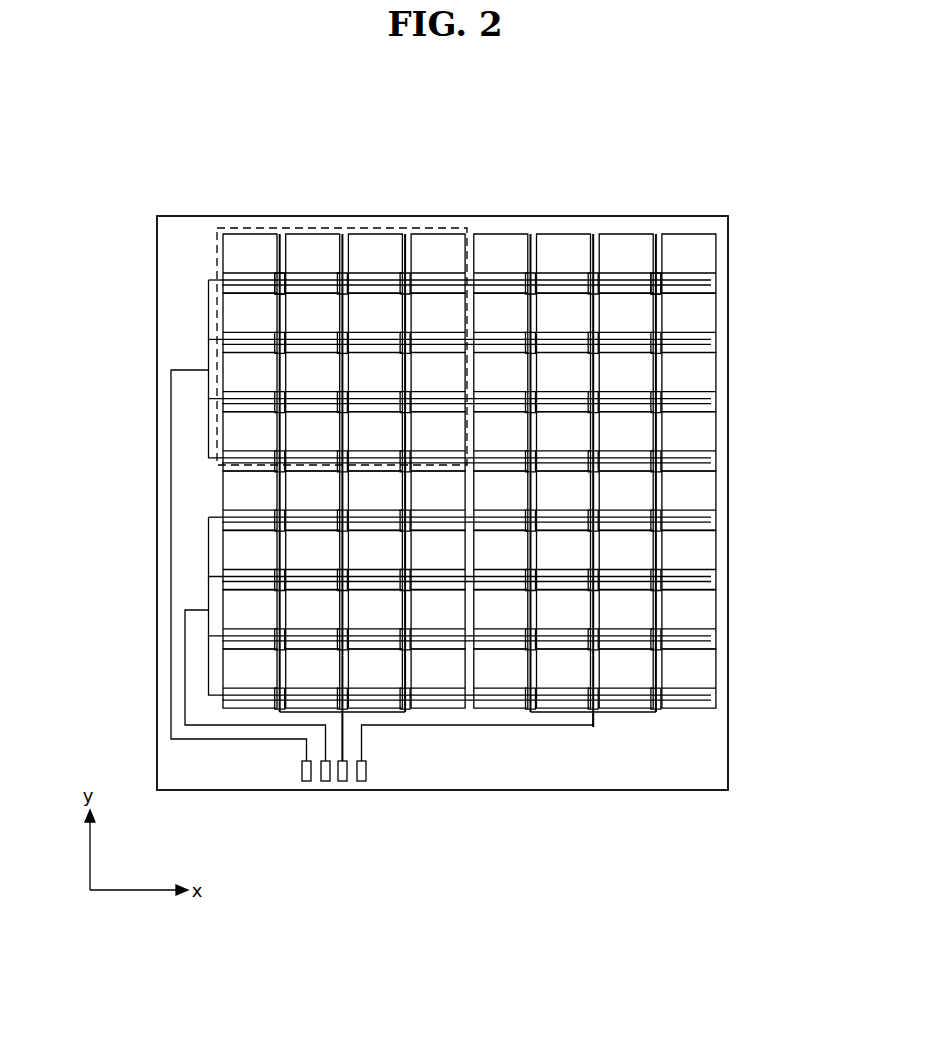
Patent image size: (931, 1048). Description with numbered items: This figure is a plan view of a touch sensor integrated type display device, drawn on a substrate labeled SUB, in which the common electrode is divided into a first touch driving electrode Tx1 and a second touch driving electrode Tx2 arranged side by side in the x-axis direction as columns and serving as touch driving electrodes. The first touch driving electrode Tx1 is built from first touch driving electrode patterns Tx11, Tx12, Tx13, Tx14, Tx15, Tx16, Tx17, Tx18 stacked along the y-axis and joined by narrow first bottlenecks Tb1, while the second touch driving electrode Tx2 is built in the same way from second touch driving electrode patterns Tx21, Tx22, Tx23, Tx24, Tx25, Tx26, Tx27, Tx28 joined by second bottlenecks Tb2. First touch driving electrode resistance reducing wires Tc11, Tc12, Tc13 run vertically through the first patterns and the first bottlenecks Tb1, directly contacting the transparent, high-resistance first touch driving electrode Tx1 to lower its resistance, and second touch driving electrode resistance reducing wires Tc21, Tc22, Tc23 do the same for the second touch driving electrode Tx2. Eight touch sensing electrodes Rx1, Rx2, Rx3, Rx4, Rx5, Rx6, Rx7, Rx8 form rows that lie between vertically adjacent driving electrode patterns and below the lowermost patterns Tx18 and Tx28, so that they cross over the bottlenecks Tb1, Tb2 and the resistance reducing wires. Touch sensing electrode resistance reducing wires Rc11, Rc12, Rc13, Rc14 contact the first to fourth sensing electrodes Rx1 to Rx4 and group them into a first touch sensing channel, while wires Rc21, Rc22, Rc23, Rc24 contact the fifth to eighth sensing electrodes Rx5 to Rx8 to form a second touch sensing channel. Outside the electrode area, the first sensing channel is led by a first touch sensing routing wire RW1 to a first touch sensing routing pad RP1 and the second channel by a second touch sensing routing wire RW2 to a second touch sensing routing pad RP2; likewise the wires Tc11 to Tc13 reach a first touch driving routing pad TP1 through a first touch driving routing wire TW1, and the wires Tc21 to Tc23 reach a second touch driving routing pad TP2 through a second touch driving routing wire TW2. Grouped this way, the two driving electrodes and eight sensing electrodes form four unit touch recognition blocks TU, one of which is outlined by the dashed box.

The substrate SUB is at (672, 778).
The unit touch recognition block TU is at (253, 228).
The first touch driving electrode Tx1 is at (455, 223).
The second touch driving electrode Tx2 is at (717, 223).
The first touch driving electrode pattern Tx11 is at (235, 249).
The first touch driving electrode pattern Tx12 is at (235, 308).
The first touch driving electrode pattern Tx13 is at (235, 368).
The first touch driving electrode pattern Tx14 is at (235, 427).
The first touch driving electrode pattern Tx15 is at (235, 486).
The first touch driving electrode pattern Tx16 is at (235, 546).
The first touch driving electrode pattern Tx17 is at (235, 605).
The first touch driving electrode pattern Tx18 is at (235, 664).
The second touch driving electrode pattern Tx21 is at (716, 250).
The second touch driving electrode pattern Tx22 is at (716, 309).
The second touch driving electrode pattern Tx23 is at (716, 368).
The second touch driving electrode pattern Tx24 is at (716, 427).
The second touch driving electrode pattern Tx25 is at (716, 486).
The second touch driving electrode pattern Tx26 is at (716, 545).
The second touch driving electrode pattern Tx27 is at (716, 604).
The second touch driving electrode pattern Tx28 is at (716, 664).
The first touch sensing electrode Rx1 is at (712, 283).
The second touch sensing electrode Rx2 is at (712, 342).
The third touch sensing electrode Rx3 is at (712, 402).
The fourth touch sensing electrode Rx4 is at (712, 461).
The fifth touch sensing electrode Rx5 is at (712, 520).
The sixth touch sensing electrode Rx6 is at (712, 580).
The seventh touch sensing electrode Rx7 is at (712, 639).
The eighth touch sensing electrode Rx8 is at (712, 698).
The first touch sensing electrode resistance reducing wire Rc11 is at (211, 283).
The second touch sensing electrode resistance reducing wire Rc12 is at (211, 342).
The third touch sensing electrode resistance reducing wire Rc13 is at (211, 372).
The fourth touch sensing electrode resistance reducing wire Rc14 is at (211, 461).
The fifth touch sensing electrode resistance reducing wire Rc21 is at (211, 520).
The sixth touch sensing electrode resistance reducing wire Rc22 is at (211, 580).
The seventh touch sensing electrode resistance reducing wire Rc23 is at (211, 639).
The eighth touch sensing electrode resistance reducing wire Rc24 is at (211, 698).
The first touch driving electrode resistance reducing wire Tc11 is at (282, 247).
The first touch driving electrode resistance reducing wire Tc12 is at (344, 247).
The first touch driving electrode resistance reducing wire Tc13 is at (407, 247).
The second touch driving electrode resistance reducing wire Tc21 is at (532, 247).
The second touch driving electrode resistance reducing wire Tc22 is at (595, 247).
The second touch driving electrode resistance reducing wire Tc23 is at (658, 247).
The first bottleneck Tb1 is at (286, 274).
The second bottleneck Tb2 is at (661, 274).
The first touch sensing routing wire RW1 is at (194, 741).
The second touch sensing routing wire RW2 is at (246, 727).
The first touch driving routing wire TW1 is at (345, 738).
The second touch driving routing wire TW2 is at (482, 728).
The first touch sensing routing pad RP1 is at (306, 783).
The second touch sensing routing pad RP2 is at (325, 783).
The first touch driving routing pad TP1 is at (343, 783).
The second touch driving routing pad TP2 is at (362, 783).